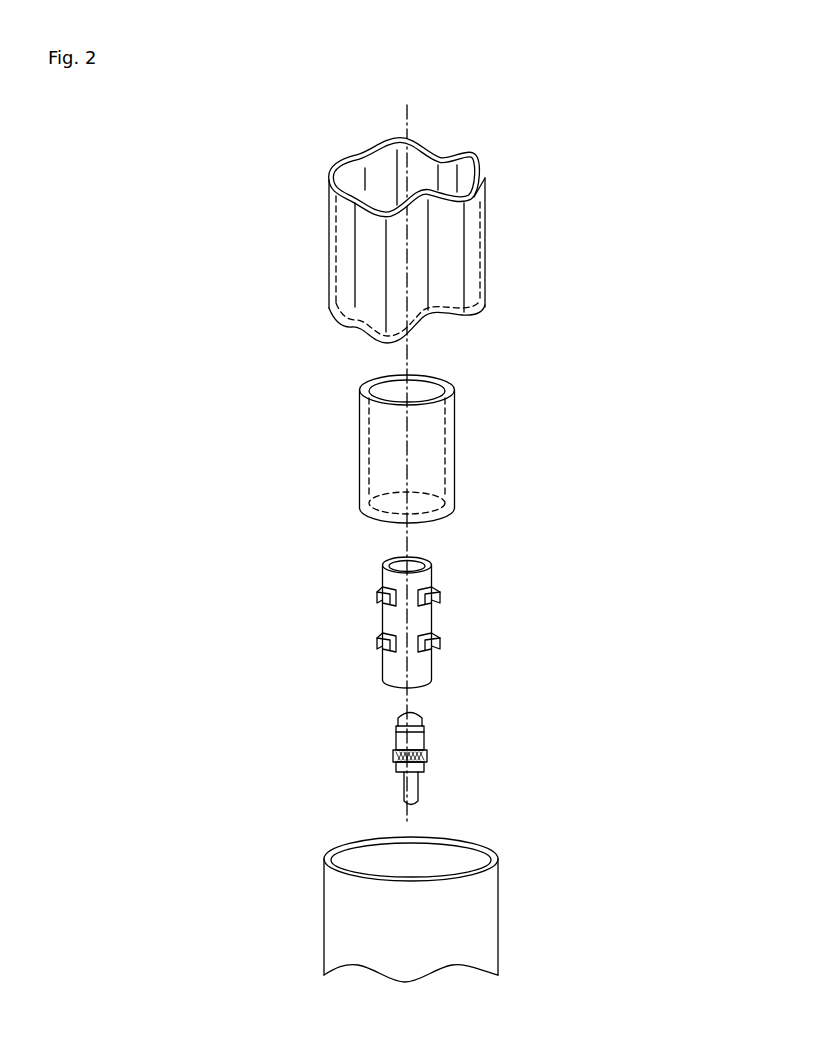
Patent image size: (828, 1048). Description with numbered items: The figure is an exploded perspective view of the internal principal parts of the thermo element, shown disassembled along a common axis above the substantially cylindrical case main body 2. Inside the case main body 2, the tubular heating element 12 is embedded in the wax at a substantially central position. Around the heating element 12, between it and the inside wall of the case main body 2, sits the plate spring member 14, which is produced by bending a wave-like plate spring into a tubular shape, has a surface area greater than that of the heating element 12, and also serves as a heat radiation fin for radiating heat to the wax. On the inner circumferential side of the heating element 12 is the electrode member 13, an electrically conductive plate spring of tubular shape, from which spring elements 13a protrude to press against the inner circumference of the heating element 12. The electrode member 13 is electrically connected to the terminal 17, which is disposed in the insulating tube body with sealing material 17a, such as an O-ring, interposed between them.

The plate spring member 14 is at (486, 223).
The heating element 12 is at (456, 428).
The electrode member 13 is at (425, 614).
The spring elements 13a is at (441, 591).
The terminal 17 is at (510, 753).
The sealing material 17a is at (428, 752).
The case main body 2 is at (499, 906).